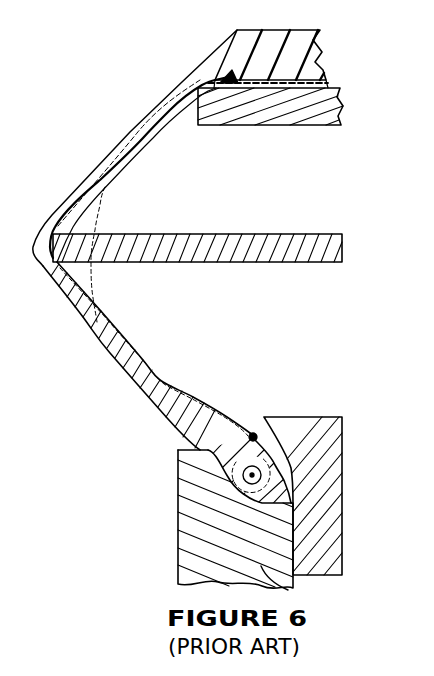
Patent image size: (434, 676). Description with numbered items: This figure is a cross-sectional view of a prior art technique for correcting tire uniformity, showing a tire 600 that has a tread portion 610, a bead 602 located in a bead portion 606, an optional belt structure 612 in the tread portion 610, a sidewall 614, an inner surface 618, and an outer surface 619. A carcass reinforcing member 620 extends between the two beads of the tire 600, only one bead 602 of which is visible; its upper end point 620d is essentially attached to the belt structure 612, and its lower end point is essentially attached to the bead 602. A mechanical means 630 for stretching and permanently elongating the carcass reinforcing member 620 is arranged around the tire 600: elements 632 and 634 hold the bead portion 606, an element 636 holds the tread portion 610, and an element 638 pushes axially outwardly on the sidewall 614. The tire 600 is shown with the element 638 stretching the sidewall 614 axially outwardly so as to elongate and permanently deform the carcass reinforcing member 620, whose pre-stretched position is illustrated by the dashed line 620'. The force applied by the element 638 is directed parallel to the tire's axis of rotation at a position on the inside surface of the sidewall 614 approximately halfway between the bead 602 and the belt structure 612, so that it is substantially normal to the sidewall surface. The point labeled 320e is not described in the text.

The tire 600 is at (206, 57).
The bead 602 is at (250, 474).
The bead portion 606 is at (250, 416).
The tread portion 610 is at (303, 30).
The belt structure 612 is at (325, 80).
The sidewall 614 is at (92, 176).
The inner surface 618 is at (143, 362).
The outer surface 619 is at (110, 354).
The carcass reinforcing member 620 is at (139, 169).
The upper end point 620d is at (227, 72).
The pre-stretched carcass reinforcing member 620' is at (137, 254).
The mechanical means 630 is at (213, 240).
The bead holding element 632 is at (300, 436).
The bead holding element 634 is at (293, 588).
The tread holding element 636 is at (273, 103).
The sidewall pushing element 638 is at (238, 251).
The hook contact point 320e is at (256, 434).